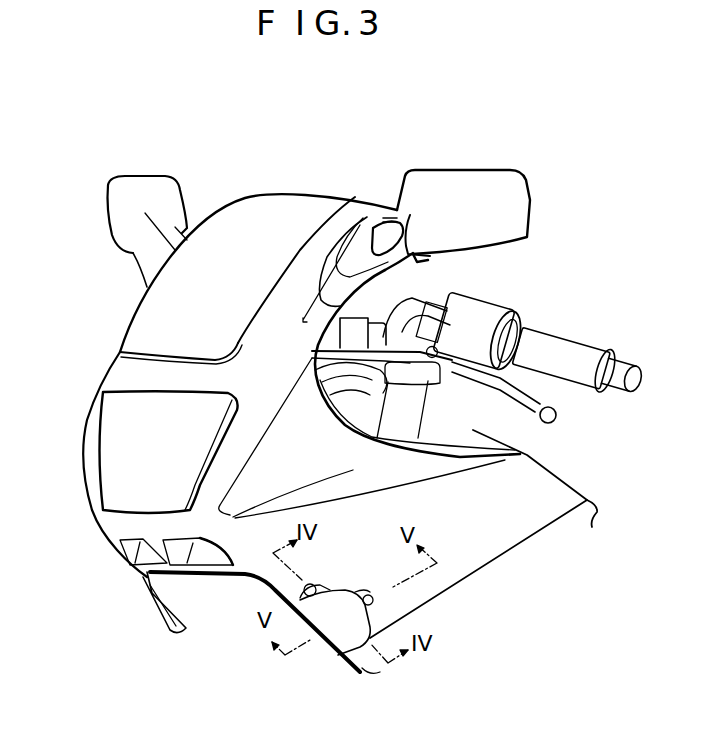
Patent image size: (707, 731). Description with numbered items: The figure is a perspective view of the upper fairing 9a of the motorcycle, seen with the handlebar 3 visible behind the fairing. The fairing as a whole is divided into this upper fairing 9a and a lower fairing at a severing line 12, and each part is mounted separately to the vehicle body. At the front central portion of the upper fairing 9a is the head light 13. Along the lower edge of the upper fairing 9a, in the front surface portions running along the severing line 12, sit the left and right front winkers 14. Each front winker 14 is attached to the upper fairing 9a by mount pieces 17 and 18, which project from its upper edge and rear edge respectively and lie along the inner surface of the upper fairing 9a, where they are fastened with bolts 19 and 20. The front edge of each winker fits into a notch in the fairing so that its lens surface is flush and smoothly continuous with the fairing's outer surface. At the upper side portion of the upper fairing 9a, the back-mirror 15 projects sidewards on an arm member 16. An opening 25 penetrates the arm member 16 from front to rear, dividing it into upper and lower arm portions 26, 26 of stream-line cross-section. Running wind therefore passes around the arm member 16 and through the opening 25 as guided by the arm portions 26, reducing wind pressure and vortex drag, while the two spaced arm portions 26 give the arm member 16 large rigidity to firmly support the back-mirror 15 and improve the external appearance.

The handlebar 3 is at (570, 352).
The upper fairing 9a is at (113, 367).
The severing line 12 is at (468, 578).
The head light 13 is at (108, 443).
The front winker 14 is at (158, 625).
The back-mirror 15 is at (474, 177).
The arm member 16 is at (363, 233).
The mount piece 17 is at (315, 585).
The mount piece 18 is at (371, 595).
The bolt 19 is at (316, 594).
The bolt 20 is at (373, 607).
The opening 25 is at (388, 218).
The arm portion 26 is at (396, 214).